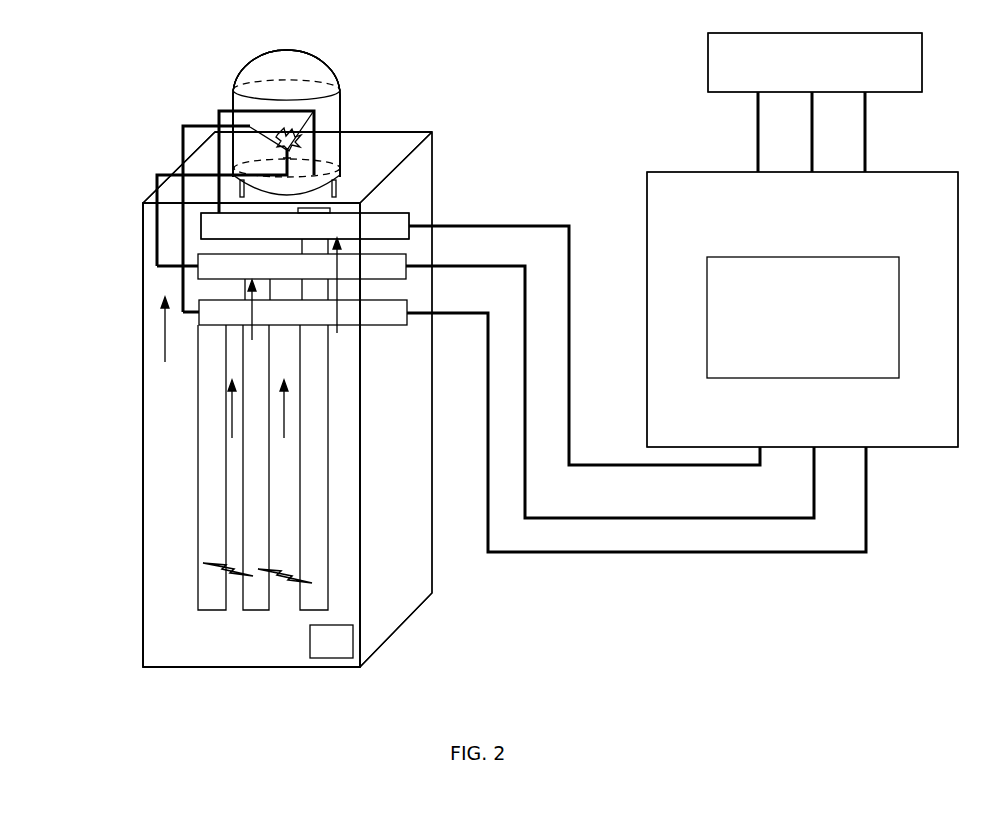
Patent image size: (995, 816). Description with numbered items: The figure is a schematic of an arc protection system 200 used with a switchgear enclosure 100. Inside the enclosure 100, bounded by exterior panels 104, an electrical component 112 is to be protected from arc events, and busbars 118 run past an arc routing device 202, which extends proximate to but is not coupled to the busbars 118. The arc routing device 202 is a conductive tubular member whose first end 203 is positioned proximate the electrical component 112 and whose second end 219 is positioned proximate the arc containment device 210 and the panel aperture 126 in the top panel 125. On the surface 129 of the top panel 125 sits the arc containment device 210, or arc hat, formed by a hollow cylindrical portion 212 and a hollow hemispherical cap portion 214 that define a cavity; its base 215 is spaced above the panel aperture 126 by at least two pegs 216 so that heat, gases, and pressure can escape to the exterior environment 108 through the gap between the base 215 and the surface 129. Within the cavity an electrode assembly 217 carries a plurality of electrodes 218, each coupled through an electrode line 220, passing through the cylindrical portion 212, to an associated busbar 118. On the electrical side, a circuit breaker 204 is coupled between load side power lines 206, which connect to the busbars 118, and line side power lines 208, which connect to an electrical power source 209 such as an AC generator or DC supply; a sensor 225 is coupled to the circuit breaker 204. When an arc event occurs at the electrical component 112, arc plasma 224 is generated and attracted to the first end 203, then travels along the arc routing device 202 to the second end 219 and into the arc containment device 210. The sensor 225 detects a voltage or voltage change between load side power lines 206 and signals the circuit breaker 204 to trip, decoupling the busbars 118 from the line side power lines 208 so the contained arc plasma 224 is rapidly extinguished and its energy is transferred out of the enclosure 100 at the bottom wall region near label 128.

The arc protection system 200 is at (111, 62).
The switchgear enclosure 100 is at (388, 613).
The exterior panels 104 is at (143, 393).
The exterior environment 108 is at (148, 135).
The electrical component 112 is at (353, 642).
The busbars 118 is at (385, 223).
The top panel 125 is at (392, 155).
The panel aperture 126 is at (305, 223).
The bottom wall 128 is at (319, 682).
The surface 129 is at (404, 118).
The arc routing device 202 is at (207, 508).
The first end 203 is at (342, 587).
The circuit breaker 204 is at (781, 199).
The load side power line 206 is at (619, 465).
The line side power line 208 is at (812, 137).
The electrical power source 209 is at (798, 66).
The arc containment device 210 is at (273, 50).
The hollow cylindrical portion 212 is at (341, 160).
The hollow hemispherical cap portion 214 is at (346, 65).
The base 215 is at (336, 169).
The pegs 216 is at (340, 190).
The electrode assembly 217 is at (328, 120).
The electrodes 218 is at (289, 136).
The second end 219 is at (292, 249).
The electrode lines 220 is at (218, 111).
The arc plasma 224 is at (285, 126).
The sensor 225 is at (786, 323).